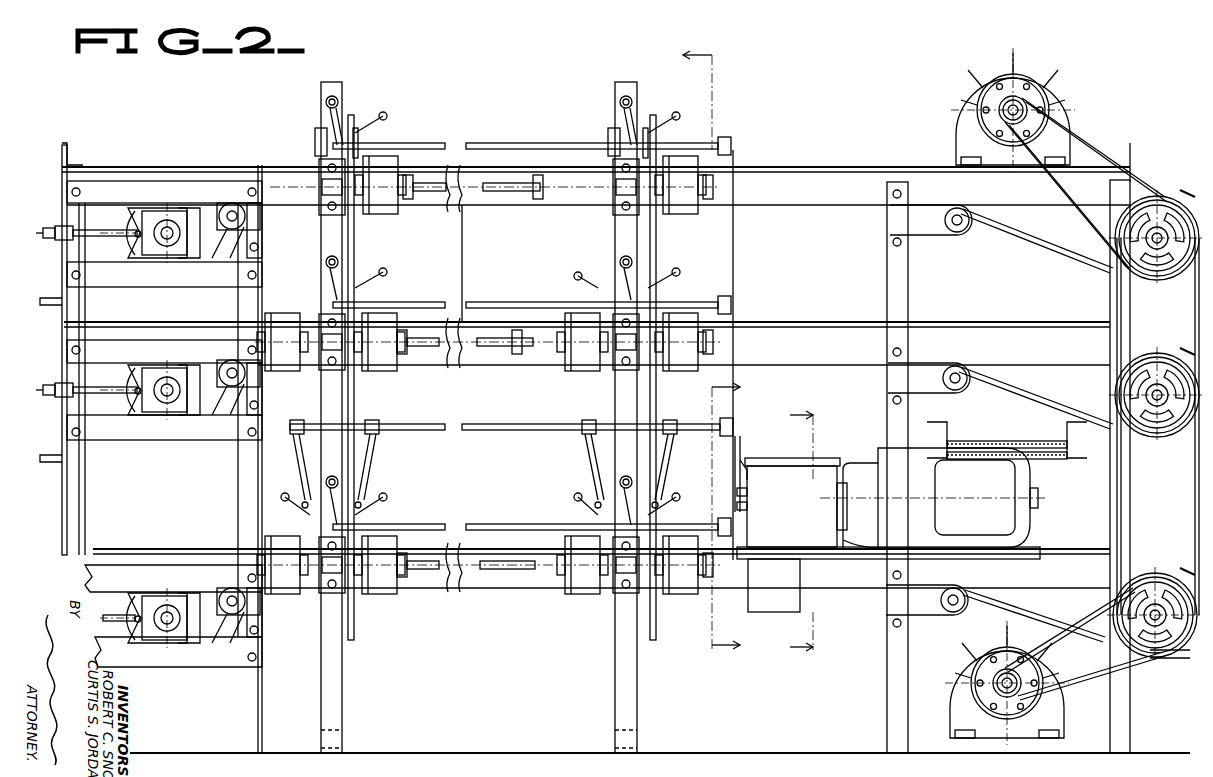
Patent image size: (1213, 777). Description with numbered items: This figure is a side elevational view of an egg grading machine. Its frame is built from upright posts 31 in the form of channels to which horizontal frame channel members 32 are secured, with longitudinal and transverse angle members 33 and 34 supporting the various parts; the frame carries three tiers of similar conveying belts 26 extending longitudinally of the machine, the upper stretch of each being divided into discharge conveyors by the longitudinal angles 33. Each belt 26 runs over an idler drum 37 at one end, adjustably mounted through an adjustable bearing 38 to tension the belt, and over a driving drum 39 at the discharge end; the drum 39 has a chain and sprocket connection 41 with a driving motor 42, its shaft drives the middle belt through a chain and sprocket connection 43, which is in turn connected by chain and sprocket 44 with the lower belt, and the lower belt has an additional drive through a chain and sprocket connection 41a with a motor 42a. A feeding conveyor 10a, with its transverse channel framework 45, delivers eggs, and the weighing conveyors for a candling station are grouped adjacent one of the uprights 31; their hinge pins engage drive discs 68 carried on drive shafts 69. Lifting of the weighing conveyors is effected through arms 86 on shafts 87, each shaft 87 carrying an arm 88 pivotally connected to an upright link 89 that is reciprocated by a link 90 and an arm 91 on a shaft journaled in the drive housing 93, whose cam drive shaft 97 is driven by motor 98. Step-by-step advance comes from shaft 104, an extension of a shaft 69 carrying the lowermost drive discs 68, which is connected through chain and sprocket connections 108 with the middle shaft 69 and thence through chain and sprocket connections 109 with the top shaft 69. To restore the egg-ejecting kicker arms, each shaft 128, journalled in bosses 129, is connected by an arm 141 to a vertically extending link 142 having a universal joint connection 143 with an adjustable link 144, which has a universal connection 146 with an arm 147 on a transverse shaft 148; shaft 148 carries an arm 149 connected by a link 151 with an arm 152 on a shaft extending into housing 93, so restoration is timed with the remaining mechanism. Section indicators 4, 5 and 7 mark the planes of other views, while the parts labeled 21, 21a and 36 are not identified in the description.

The section line 4 is at (706, 98).
The section line 5 is at (719, 516).
The section line 7 is at (810, 531).
The feeding conveyor 10a is at (1025, 440).
The feed roller 21 is at (380, 215).
The feed roller 21a is at (281, 372).
The conveying belt 26 is at (1020, 232).
The upright post 31 is at (340, 657).
The horizontal frame channel member 32 is at (800, 166).
The longitudinal angle member 33 is at (446, 378).
The angle member 34 is at (63, 160).
The pulley 36 is at (208, 640).
The idler drum 37 is at (195, 258).
The adjustable bearing 38 is at (152, 257).
The driving drum 39 is at (1135, 198).
The chain and sprocket connection 41 is at (1080, 140).
The chain and sprocket connection 41a is at (1078, 680).
The driving motor 42 is at (1040, 72).
The motor 42a is at (968, 650).
The chain and sprocket connection 43 is at (1110, 289).
The chain and sprocket 44 is at (1195, 508).
The transverse channel framework 45 is at (947, 428).
The drive disc 68 is at (385, 180).
The drive shaft 69 is at (510, 192).
The arm 86 is at (325, 111).
The shaft 87 is at (447, 142).
The arm 88 is at (726, 137).
The upright link 89 is at (734, 226).
The link 90 is at (748, 492).
The arm 91 is at (748, 506).
The drive housing 93 is at (770, 613).
The drive shaft 97 is at (836, 500).
The motor 98 is at (866, 455).
The shaft extension 104 is at (725, 570).
The chain and sprocket connections 108 is at (542, 451).
The chain and sprocket connections 109 is at (530, 241).
The shaft 128 is at (384, 112).
The boss 129 is at (650, 112).
The arm 141 is at (368, 120).
The vertically extending link 142 is at (357, 246).
The universal joint connection 143 is at (305, 500).
The adjustable link 144 is at (298, 453).
The universal connection 146 is at (366, 450).
The arm 147 is at (295, 420).
The transverse shaft 148 is at (427, 431).
The arm 149 is at (735, 420).
The link 151 is at (741, 445).
The arm 152 is at (748, 468).